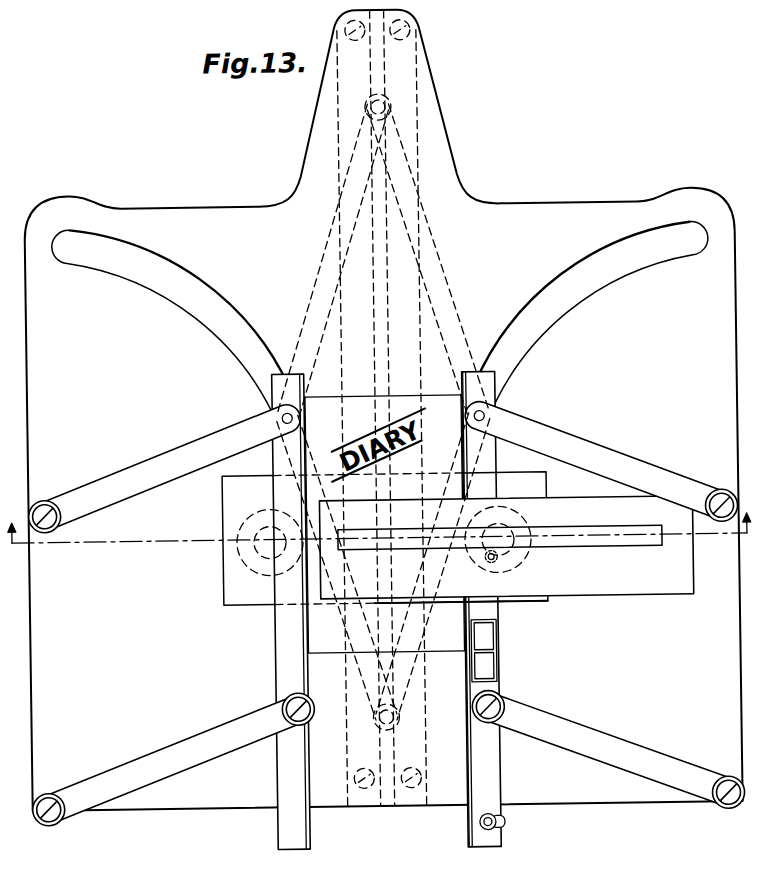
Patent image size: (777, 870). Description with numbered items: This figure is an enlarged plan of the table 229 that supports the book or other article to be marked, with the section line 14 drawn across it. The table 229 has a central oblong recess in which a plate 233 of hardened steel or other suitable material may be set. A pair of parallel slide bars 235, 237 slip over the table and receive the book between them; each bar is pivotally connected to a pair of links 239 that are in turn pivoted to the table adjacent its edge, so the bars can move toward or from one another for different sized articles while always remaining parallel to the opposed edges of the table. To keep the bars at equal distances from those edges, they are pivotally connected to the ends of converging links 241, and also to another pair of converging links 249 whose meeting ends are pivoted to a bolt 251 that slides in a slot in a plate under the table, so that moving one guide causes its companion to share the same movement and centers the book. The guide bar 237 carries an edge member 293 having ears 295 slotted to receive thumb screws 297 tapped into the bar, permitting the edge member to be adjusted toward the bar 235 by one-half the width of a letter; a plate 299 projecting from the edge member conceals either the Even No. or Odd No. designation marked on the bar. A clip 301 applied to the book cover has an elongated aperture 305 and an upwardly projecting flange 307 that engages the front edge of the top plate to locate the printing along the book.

The section line 14 is at (384, 520).
The table 229 is at (157, 798).
The plate 233 is at (225, 591).
The slide bar 235 is at (288, 663).
The slide bar 237 is at (487, 688).
The links 239 is at (158, 460).
The converging links 241 is at (355, 583).
The converging links 249 is at (319, 275).
The bolt 251 is at (398, 103).
The edge member 293 is at (466, 760).
The ears 295 is at (502, 823).
The thumb screws 297 is at (482, 832).
The plate 299 is at (497, 628).
The clip 301 is at (623, 599).
The elongated aperture 305 is at (367, 533).
The flange 307 is at (448, 606).